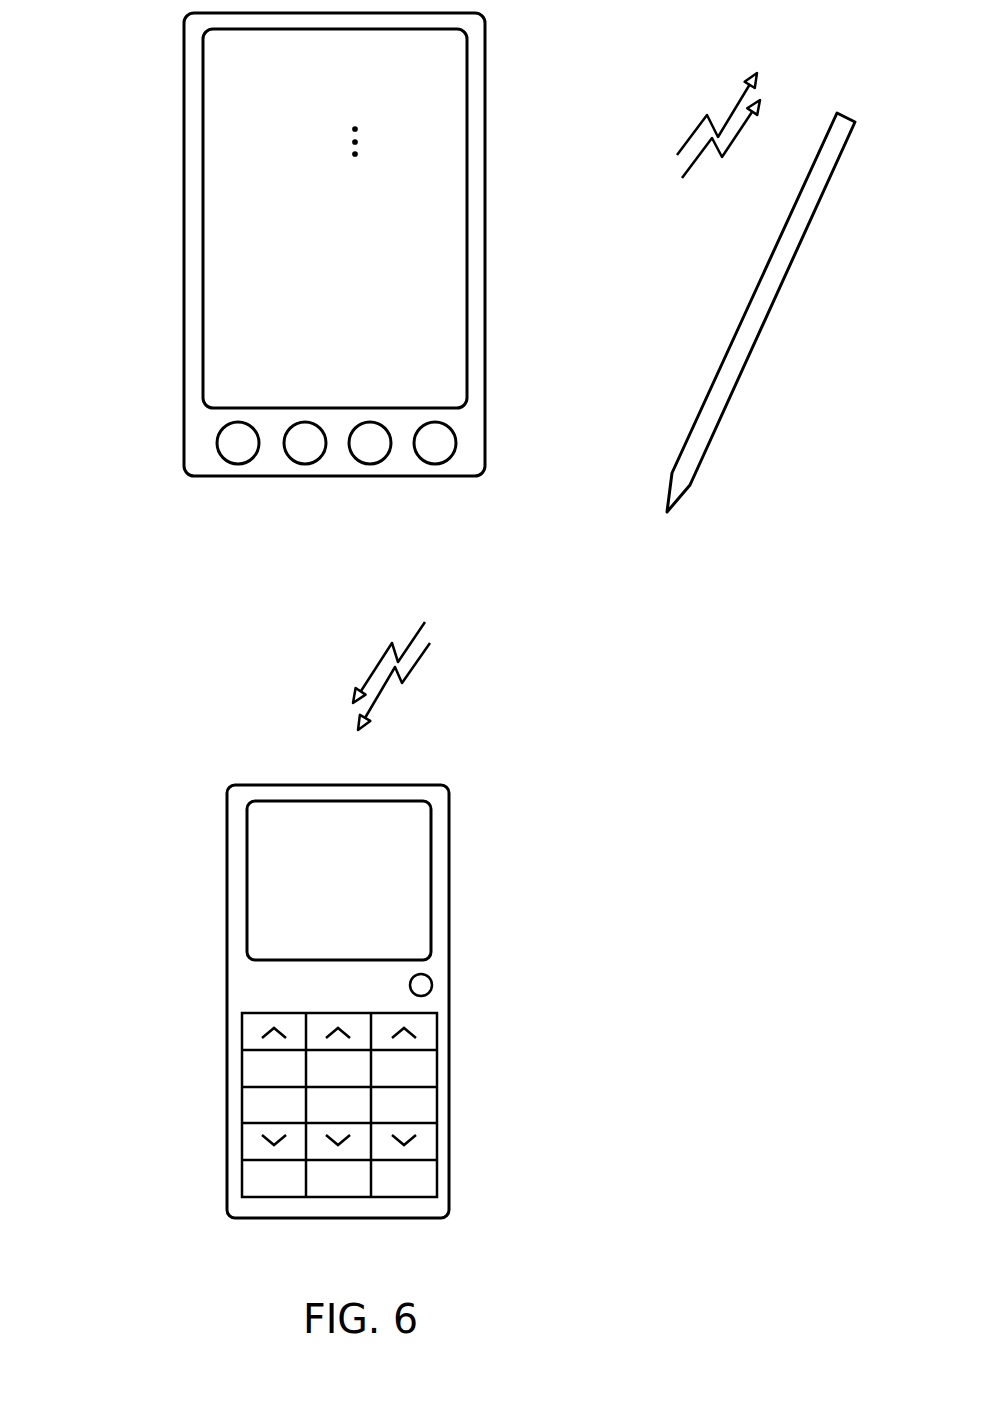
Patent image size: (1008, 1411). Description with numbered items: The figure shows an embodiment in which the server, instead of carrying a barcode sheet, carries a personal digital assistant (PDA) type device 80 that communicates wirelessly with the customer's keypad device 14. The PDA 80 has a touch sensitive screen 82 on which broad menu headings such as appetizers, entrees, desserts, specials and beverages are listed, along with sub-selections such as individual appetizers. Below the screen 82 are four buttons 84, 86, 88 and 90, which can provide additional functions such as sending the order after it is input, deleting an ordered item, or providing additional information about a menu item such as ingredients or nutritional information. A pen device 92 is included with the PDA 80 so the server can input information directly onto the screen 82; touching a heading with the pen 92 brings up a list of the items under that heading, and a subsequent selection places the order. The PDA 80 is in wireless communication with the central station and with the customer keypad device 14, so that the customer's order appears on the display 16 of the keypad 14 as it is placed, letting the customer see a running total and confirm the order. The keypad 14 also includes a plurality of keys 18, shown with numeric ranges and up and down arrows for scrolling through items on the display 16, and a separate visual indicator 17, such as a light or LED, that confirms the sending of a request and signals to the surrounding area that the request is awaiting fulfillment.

The keypad 14 is at (449, 1002).
The display 16 is at (418, 920).
The visual indicator 17 is at (424, 974).
The keys 18 is at (432, 1073).
The personal digital assistant device 80 is at (184, 285).
The touch sensitive screen 82 is at (212, 242).
The button 84 is at (238, 453).
The button 86 is at (305, 453).
The button 88 is at (371, 453).
The button 90 is at (436, 453).
The pen device 92 is at (740, 322).